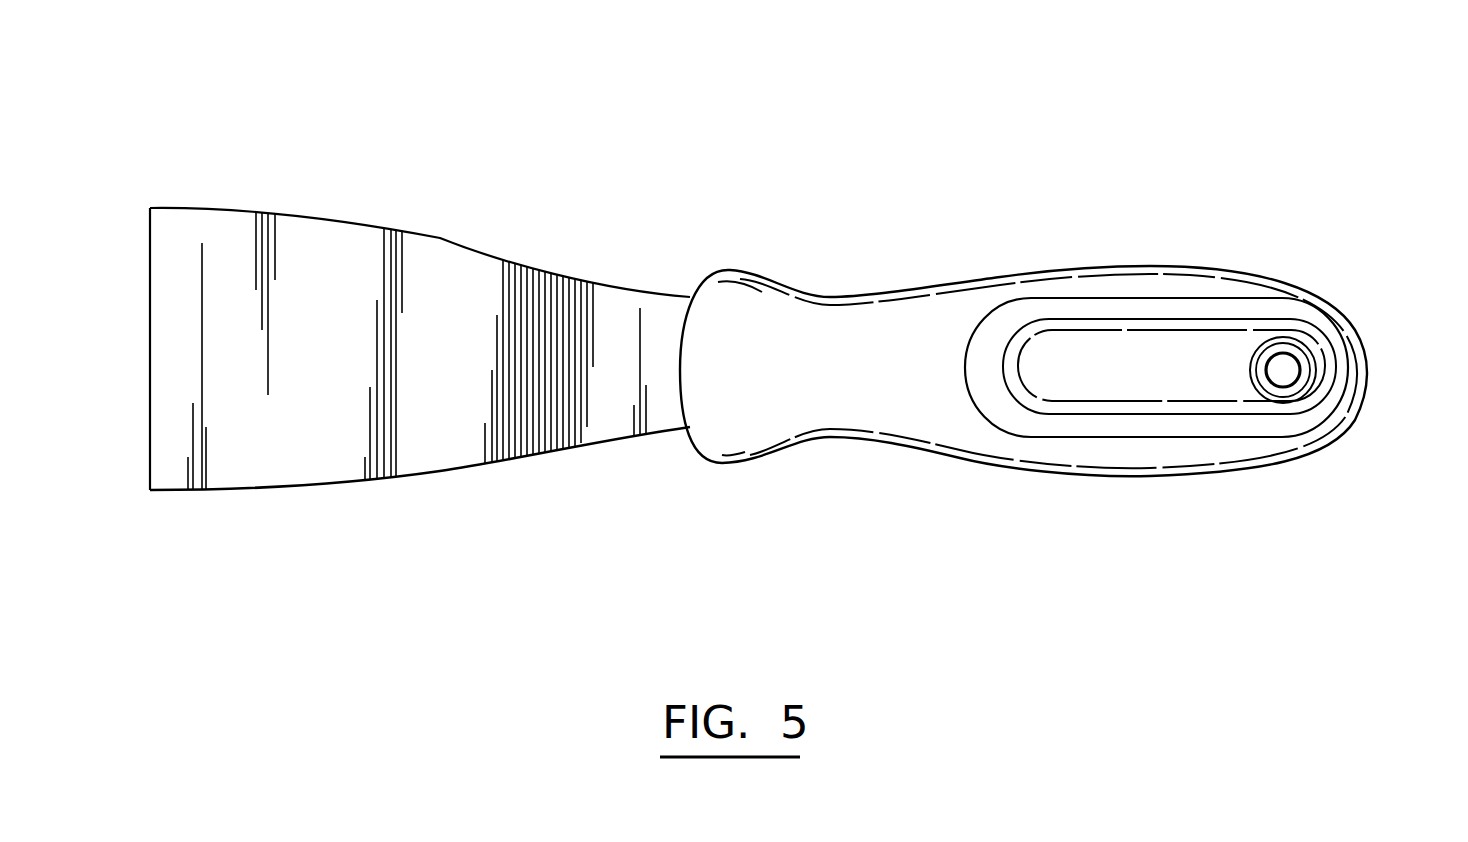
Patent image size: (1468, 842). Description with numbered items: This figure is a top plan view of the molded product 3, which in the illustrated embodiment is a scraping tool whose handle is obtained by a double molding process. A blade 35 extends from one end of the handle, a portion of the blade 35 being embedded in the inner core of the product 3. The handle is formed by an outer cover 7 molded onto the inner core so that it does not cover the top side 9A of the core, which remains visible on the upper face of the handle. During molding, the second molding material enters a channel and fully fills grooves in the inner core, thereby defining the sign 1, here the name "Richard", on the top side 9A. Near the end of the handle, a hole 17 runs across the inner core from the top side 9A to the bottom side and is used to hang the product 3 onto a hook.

The blade 35 is at (322, 247).
The outer cover 7 is at (840, 345).
The product 3 is at (1070, 295).
The top side 9A is at (1205, 352).
The sign 1 is at (1120, 355).
The hole 17 is at (1283, 370).